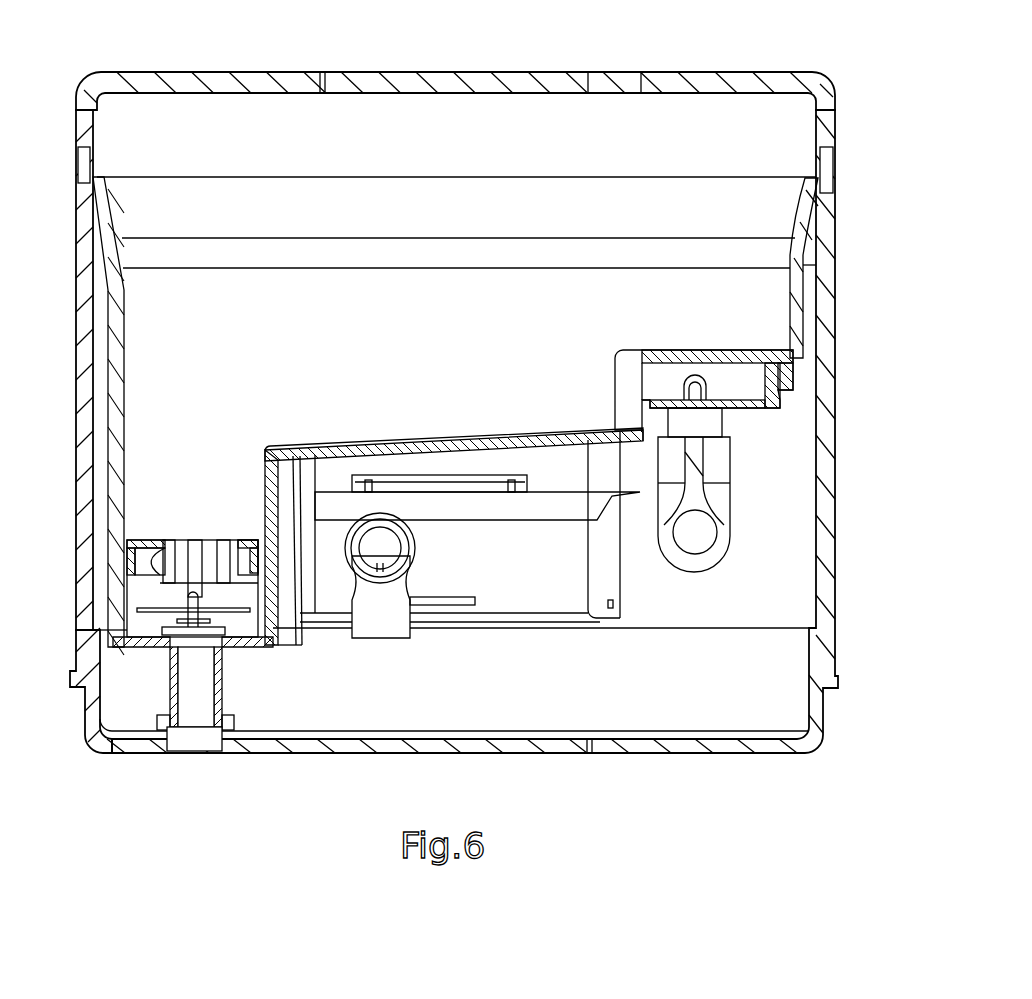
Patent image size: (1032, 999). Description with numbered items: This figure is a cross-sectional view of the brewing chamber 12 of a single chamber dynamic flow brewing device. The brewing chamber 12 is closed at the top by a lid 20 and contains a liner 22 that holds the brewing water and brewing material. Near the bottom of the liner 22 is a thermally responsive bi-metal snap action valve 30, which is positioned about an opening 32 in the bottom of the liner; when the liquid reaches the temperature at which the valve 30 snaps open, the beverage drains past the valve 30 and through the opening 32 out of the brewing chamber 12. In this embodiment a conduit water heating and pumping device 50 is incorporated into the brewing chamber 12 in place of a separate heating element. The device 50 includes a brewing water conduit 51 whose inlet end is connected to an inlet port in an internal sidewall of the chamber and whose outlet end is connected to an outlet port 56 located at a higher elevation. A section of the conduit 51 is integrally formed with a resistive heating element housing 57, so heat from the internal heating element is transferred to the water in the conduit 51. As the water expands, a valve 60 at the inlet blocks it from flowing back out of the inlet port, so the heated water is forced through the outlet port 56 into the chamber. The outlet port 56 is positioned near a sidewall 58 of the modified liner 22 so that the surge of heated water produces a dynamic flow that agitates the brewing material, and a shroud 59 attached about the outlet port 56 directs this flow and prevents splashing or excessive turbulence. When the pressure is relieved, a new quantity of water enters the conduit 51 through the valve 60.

The brewing chamber 12 is at (833, 452).
The lid 20 is at (670, 76).
The liner 22 is at (116, 362).
The thermally responsive bi-metal snap action valve 30 is at (148, 626).
The opening 32 is at (190, 739).
The conduit water heating and pumping device 50 is at (398, 643).
The brewing water conduit 51 is at (410, 548).
The outlet port 56 is at (700, 382).
The resistive heating element housing 57 is at (380, 606).
The sidewall 58 is at (797, 303).
The shroud 59 is at (668, 360).
The valve 60 is at (188, 577).